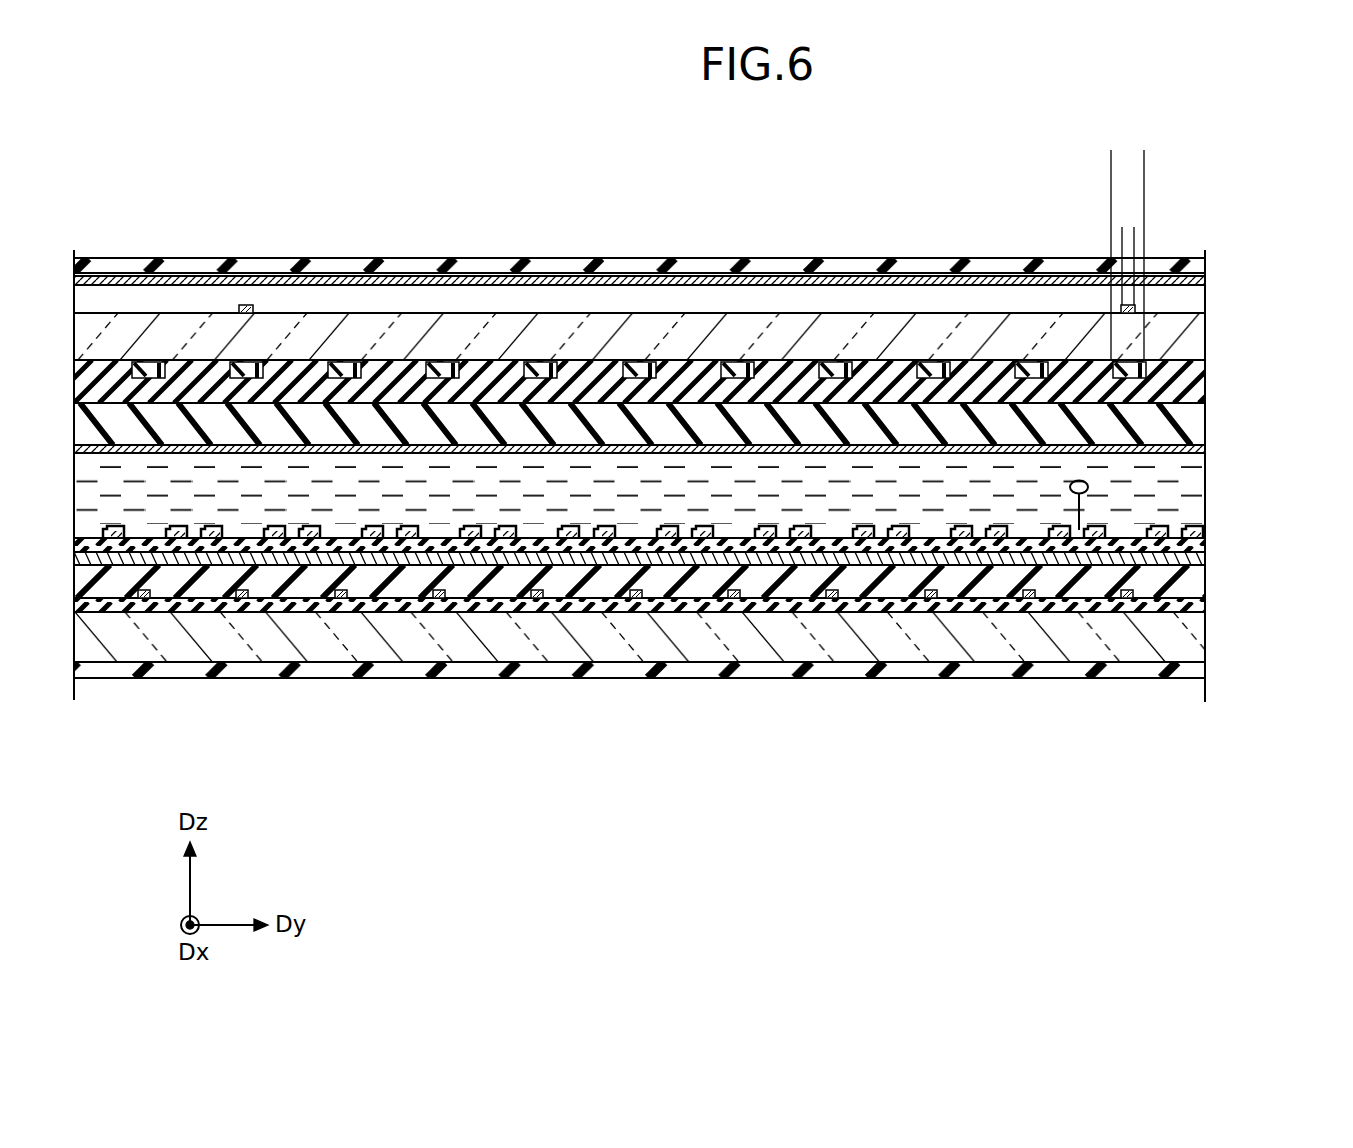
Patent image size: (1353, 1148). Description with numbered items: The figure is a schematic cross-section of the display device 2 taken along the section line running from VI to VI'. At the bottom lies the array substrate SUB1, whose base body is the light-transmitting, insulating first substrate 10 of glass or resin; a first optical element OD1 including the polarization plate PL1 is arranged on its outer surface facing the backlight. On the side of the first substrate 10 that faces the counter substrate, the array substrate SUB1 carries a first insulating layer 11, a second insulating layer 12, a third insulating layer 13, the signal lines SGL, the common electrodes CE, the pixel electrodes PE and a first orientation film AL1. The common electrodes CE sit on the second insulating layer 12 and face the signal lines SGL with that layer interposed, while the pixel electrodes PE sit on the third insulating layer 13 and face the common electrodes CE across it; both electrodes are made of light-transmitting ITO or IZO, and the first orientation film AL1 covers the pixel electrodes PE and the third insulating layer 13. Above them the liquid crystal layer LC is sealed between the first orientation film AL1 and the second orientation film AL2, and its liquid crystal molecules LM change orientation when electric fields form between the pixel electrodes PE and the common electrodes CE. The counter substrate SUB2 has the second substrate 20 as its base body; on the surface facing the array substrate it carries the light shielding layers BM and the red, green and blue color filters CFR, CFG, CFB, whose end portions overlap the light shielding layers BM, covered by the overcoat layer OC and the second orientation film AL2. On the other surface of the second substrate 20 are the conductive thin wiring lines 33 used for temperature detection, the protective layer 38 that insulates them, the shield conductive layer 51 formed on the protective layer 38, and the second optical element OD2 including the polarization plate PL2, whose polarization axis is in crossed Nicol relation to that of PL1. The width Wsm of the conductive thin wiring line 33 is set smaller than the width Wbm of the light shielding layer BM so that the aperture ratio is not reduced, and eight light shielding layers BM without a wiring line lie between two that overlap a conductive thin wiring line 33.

The display device 2 is at (1242, 243).
The first substrate 10 is at (1190, 641).
The first insulating layer 11 is at (1193, 620).
The second insulating layer 12 is at (1193, 590).
The third insulating layer 13 is at (1197, 549).
The second substrate 20 is at (1193, 340).
The conductive thin wiring line 33 is at (246, 305).
The protective layer 38 is at (1193, 302).
The shield conductive layer 51 is at (1193, 283).
The light shielding layer BM is at (1129, 362).
The blue color filter CFB is at (1091, 380).
The red color filter CFR is at (1157, 372).
The green color filter CFG is at (993, 380).
The first optical element OD1 is at (1193, 678).
The second optical element OD2 is at (1195, 266).
The polarization plate PL1 is at (639, 670).
The polarization plate PL2 is at (639, 265).
The array substrate SUB1 is at (1215, 570).
The counter substrate SUB2 is at (1215, 380).
The overcoat layer OC is at (1195, 414).
The first orientation film AL1 is at (1200, 530).
The second orientation film AL2 is at (1193, 447).
The liquid crystal layer LC is at (1193, 477).
The liquid crystal molecule LM is at (1079, 535).
The common electrode CE is at (1197, 560).
The pixel electrode PE is at (1160, 545).
The signal line SGL is at (1127, 600).
The width of the light shielding layer Wbm is at (1144, 158).
The width of the conductive thin wiring line Wsm is at (1098, 237).
The cross-section line VI is at (74, 495).
The cross-section line VI' is at (1219, 495).